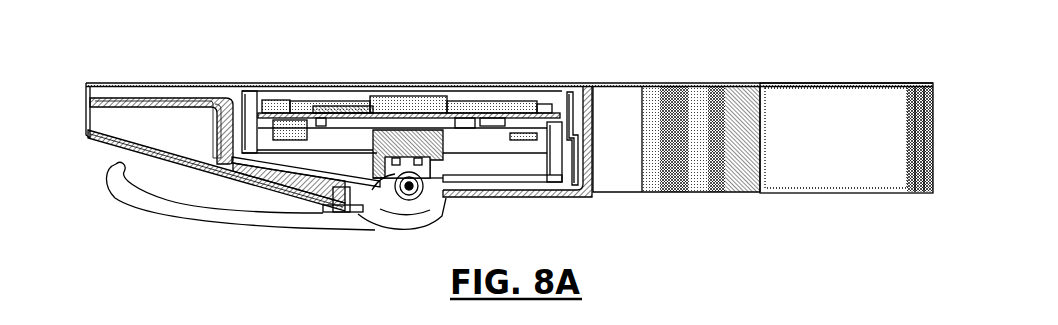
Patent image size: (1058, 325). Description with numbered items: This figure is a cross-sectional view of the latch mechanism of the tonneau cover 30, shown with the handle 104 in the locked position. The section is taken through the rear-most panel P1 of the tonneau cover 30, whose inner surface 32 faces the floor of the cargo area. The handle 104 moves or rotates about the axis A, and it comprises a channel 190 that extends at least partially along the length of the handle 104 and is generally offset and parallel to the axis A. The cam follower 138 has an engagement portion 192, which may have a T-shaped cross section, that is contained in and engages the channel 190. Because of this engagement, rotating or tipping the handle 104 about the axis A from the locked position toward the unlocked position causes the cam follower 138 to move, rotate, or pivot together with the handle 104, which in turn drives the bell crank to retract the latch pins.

The tonneau cover 30 is at (494, 80).
The inner surface 32 is at (118, 108).
The panel P1 is at (259, 82).
The cam follower 138 is at (412, 130).
The axis A is at (412, 187).
The channel 190 is at (427, 167).
The engagement portion 192 is at (390, 170).
The handle 104 is at (157, 208).